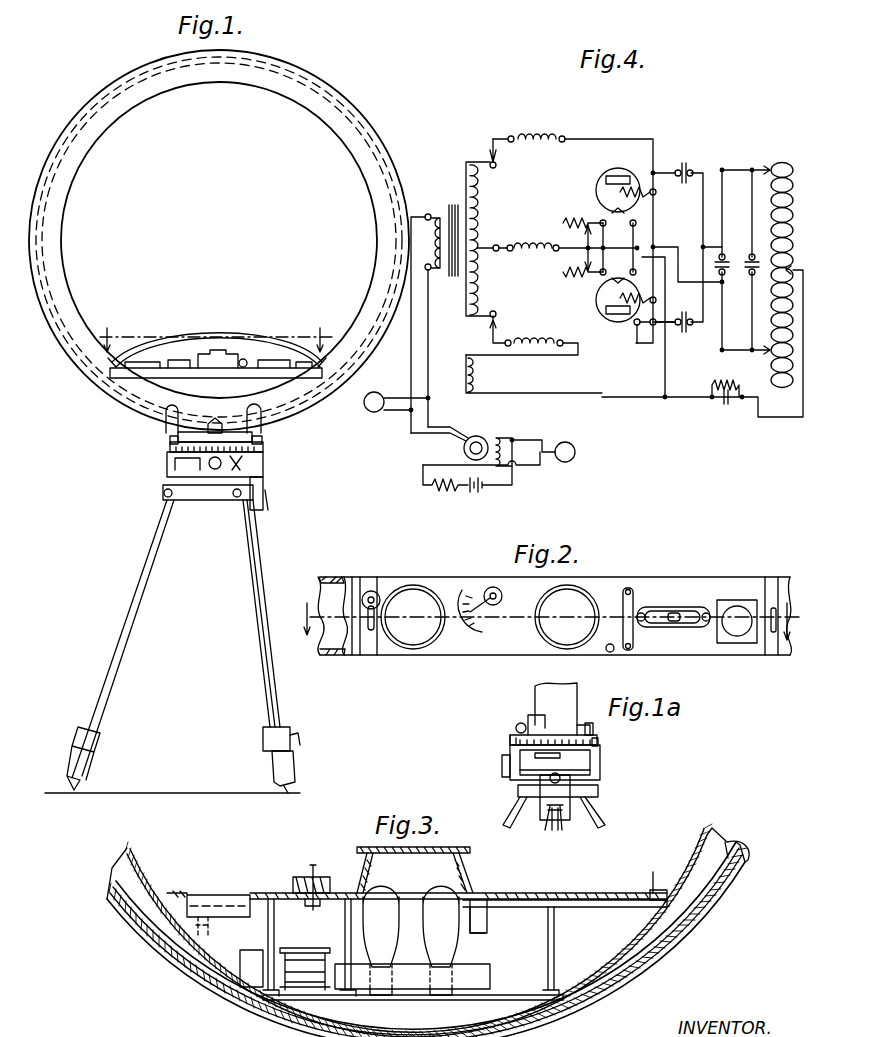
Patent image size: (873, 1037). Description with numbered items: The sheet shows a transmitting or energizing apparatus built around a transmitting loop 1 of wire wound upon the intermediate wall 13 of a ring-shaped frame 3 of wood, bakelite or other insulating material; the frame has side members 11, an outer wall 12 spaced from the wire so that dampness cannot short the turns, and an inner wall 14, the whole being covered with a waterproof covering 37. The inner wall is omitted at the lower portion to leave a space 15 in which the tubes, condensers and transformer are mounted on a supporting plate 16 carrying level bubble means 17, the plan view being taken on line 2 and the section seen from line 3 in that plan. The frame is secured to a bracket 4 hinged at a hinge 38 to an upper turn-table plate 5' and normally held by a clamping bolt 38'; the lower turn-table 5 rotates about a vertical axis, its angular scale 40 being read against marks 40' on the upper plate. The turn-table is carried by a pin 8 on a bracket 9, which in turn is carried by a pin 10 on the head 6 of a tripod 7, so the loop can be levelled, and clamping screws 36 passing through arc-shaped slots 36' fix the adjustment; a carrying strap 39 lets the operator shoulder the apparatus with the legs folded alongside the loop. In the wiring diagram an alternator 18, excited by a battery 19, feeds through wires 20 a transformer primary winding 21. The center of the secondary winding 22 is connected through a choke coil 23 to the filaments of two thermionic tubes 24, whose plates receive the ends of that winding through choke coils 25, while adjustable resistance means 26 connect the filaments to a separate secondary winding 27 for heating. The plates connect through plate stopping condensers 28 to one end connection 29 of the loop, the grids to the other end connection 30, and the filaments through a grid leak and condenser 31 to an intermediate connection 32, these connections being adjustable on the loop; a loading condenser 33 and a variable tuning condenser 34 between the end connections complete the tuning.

In FIG. 1, the transmitting loop 1 is at (74, 340).
In FIG. 4, the transmitting loop 1 is at (778, 163).
In FIG. 3, the transmitting loop 1 is at (706, 940).
In FIG. 1, the section line 2- 2 is at (217, 331).
In FIG. 1, the ring-shaped frame 3 is at (370, 345).
In FIG. 2, the ring-shaped frame 3 is at (549, 621).
In FIG. 1A, the ring-shaped frame 3 is at (535, 702).
In FIG. 1, the bracket 4 is at (166, 425).
In FIG. 1A, the bracket 4 is at (580, 725).
In FIG. 1, the turn-table 5 is at (236, 449).
In FIG. 1A, the turn-table 5 is at (573, 745).
In FIG. 1, the upper turn-table plate 5' is at (241, 429).
In FIG. 1A, the upper turn-table plate 5' is at (493, 749).
In FIG. 1, the tripod head 6 is at (215, 500).
In FIG. 1A, the tripod head 6 is at (532, 800).
In FIG. 1, the tripod 7 is at (133, 604).
In FIG. 1A, the tripod 7 is at (596, 826).
In FIG. 1, the pin 8 is at (176, 462).
In FIG. 1A, the pin 8 is at (592, 758).
In FIG. 1, the bracket 9 is at (208, 470).
In FIG. 1A, the bracket 9 is at (595, 770).
In FIG. 1A, the pin 10 is at (572, 790).
In FIG. 2, the side members 11 is at (336, 577).
In FIG. 3, the outer wall 12 is at (742, 880).
In FIG. 3, the intermediate wall 13 is at (735, 850).
In FIG. 3, the inner wall 14 is at (700, 836).
In FIG. 3, the space 15 is at (567, 940).
In FIG. 3, the supporting plate 16 is at (588, 893).
In FIG. 2, the level bubble means 17 is at (672, 607).
In FIG. 4, the alternator 18 is at (482, 438).
In FIG. 4, the battery 19 is at (482, 494).
In FIG. 4, the wires 20 is at (428, 358).
In FIG. 4, the transformer primary winding 21 is at (425, 323).
In FIG. 4, the secondary winding 22 is at (480, 225).
In FIG. 4, the choke coil 23 is at (537, 253).
In FIG. 4, the thermionic tubes 24 is at (596, 190).
In FIG. 4, the choke coils 25 is at (544, 134).
In FIG. 4, the adjustable resistance means 26 is at (583, 246).
In FIG. 4, the secondary winding 27 is at (466, 375).
In FIG. 4, the plate stopping condensers 28 is at (686, 164).
In FIG. 4, the end connection 29 is at (768, 166).
In FIG. 4, the end connection 30 is at (747, 361).
In FIG. 4, the grid leak and condenser 31 is at (722, 403).
In FIG. 4, the intermediate connection 32 is at (792, 262).
In FIG. 4, the loading condenser 33 is at (724, 256).
In FIG. 4, the variable tuning condenser 34 is at (751, 275).
In FIG. 1, the clamping screws 36 is at (238, 464).
In FIG. 1A, the clamping screws 36 is at (537, 839).
In FIG. 1, the arc-shaped slots 36' is at (286, 493).
In FIG. 1A, the arc-shaped slots 36' is at (574, 839).
In FIG. 3, the waterproof covering 37 is at (706, 880).
In FIG. 1, the hinge 38 is at (211, 414).
In FIG. 1A, the hinge 38 is at (496, 729).
In FIG. 1A, the clamping bolt 38' is at (613, 725).
In FIG. 1, the carrying strap 39 is at (250, 323).
In FIG. 1, the angular scale 40 is at (138, 453).
In FIG. 1A, the angular scale 40 is at (488, 777).
In FIG. 1, the marks 40' is at (264, 410).
In FIG. 1A, the marks 40' is at (643, 731).